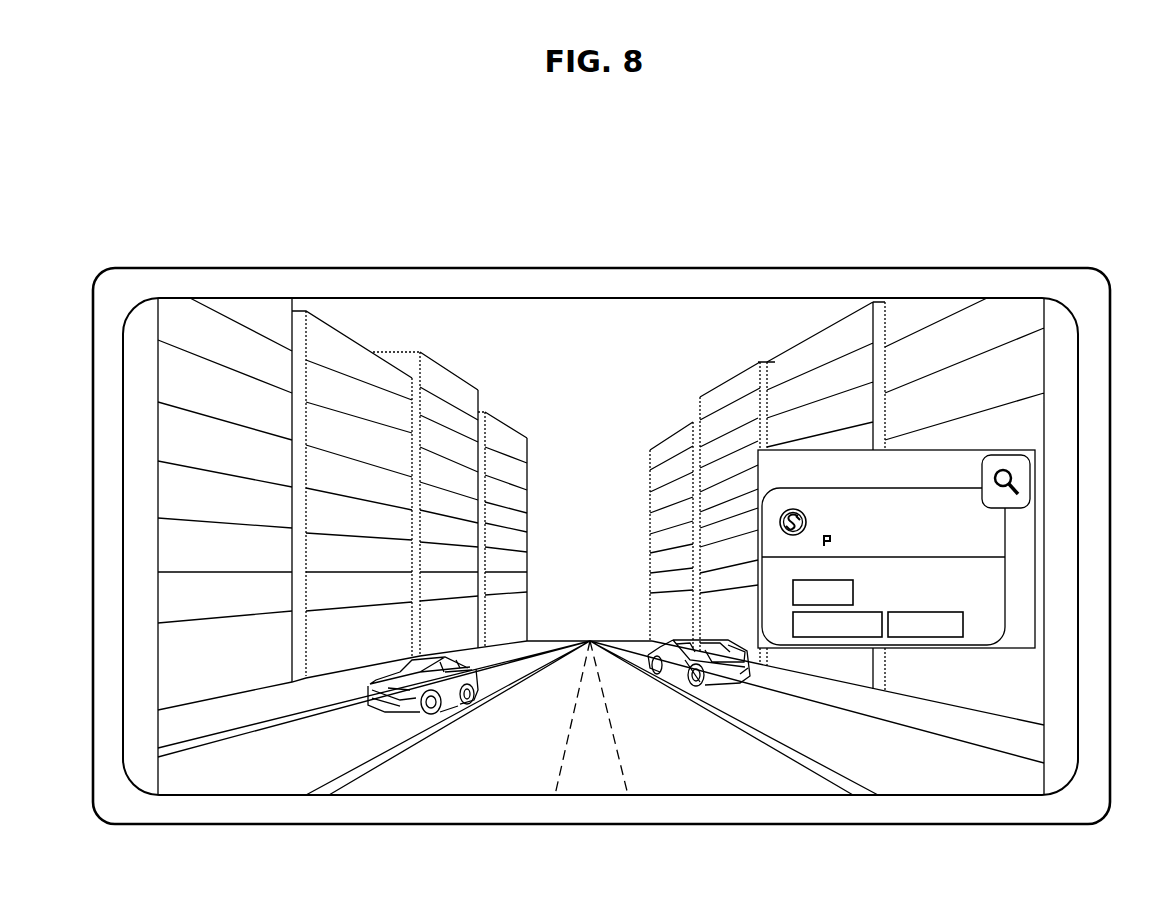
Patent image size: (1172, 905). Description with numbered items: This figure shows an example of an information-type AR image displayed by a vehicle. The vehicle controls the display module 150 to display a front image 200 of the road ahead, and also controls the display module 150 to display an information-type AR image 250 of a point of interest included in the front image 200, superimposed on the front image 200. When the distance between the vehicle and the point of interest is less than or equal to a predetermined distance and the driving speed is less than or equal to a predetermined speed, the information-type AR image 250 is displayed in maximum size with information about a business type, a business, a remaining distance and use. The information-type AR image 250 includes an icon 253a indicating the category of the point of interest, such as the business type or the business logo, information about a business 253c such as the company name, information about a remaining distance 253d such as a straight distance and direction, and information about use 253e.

The display module 150 is at (993, 285).
The front image 200 is at (549, 330).
The information-type AR image 250 is at (864, 449).
The icon 253a is at (779, 520).
The information about a business 253c is at (865, 510).
The information about a remaining distance 253d is at (812, 507).
The information about use 253e is at (931, 598).